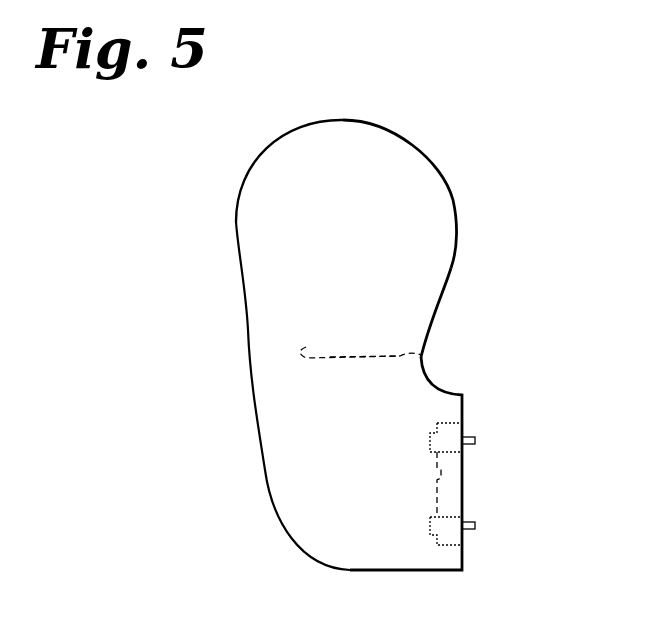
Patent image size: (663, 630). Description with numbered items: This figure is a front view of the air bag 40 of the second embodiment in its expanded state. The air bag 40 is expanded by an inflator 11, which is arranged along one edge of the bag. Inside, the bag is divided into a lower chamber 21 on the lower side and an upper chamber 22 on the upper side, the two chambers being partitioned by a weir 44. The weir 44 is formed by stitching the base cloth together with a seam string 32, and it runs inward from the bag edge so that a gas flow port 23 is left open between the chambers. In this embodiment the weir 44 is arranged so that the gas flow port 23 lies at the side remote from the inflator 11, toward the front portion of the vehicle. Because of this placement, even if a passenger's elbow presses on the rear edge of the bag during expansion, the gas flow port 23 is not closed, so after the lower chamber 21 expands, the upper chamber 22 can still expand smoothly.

The air bag 40 is at (484, 170).
The upper chamber 22 is at (314, 147).
The weir 44 is at (412, 346).
The lower chamber 21 is at (285, 465).
The gas flow port 23 is at (272, 355).
The seam string 32 is at (358, 362).
The inflator 11 is at (464, 485).